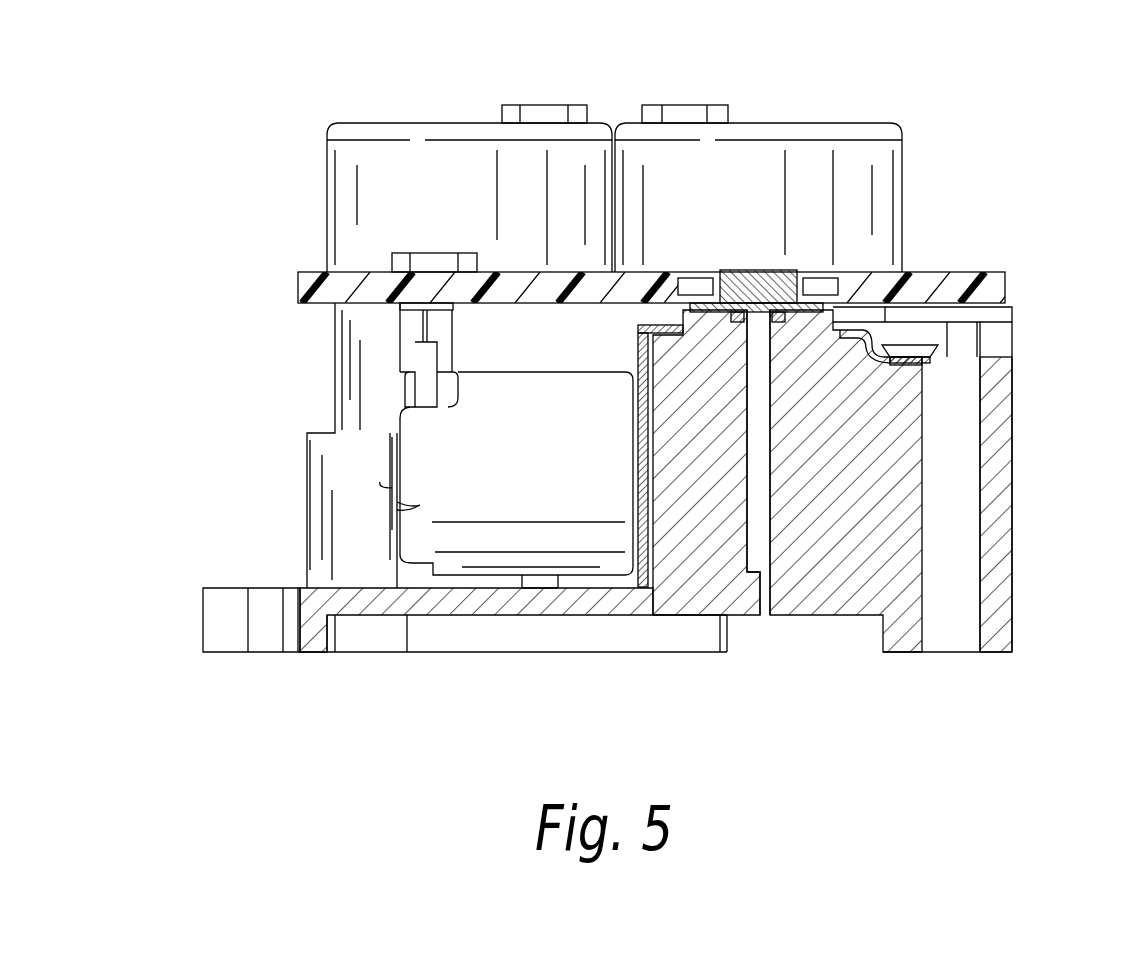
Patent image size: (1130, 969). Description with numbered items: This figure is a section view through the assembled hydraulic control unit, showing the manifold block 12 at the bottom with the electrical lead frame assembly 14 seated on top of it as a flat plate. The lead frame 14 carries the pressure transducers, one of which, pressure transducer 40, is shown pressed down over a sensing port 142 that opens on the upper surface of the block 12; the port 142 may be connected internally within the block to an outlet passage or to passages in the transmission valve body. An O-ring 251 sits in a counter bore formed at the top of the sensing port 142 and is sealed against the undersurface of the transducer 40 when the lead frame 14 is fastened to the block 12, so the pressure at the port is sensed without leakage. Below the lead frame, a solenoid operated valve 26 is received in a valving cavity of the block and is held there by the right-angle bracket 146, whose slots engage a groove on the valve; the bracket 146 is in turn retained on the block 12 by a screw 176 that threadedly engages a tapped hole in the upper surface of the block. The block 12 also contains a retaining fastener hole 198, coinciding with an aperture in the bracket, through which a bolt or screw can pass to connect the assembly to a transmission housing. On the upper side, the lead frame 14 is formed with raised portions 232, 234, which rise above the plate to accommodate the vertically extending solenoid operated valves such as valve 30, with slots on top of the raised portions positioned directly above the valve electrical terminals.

The manifold block 12 is at (830, 613).
The electrical lead frame assembly 14 is at (308, 270).
The solenoid operated valve 26 is at (497, 540).
The solenoid operated valve 30 is at (335, 352).
The pressure transducer 40 is at (735, 270).
The sensing port 142 is at (763, 615).
The bracket 146 is at (633, 352).
The screw 176 is at (917, 347).
The retaining fastener hole 198 is at (922, 495).
The raised portion 232 is at (343, 187).
The raised portion 234 is at (890, 195).
The O-ring 251 is at (780, 330).